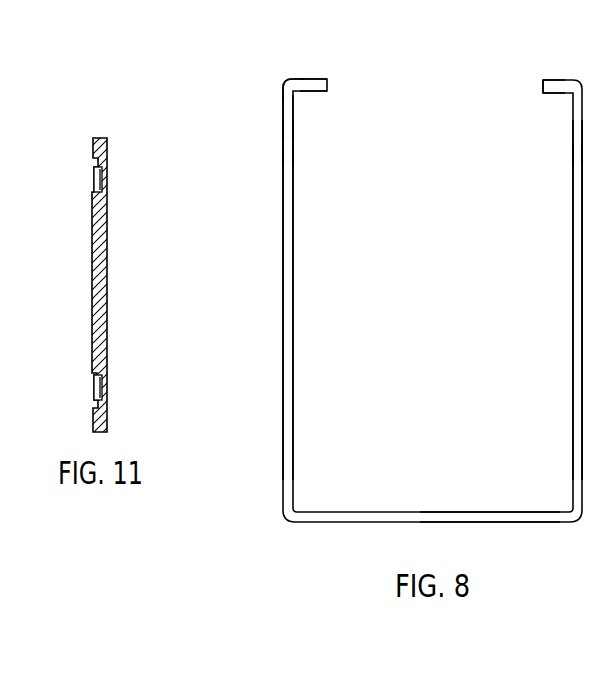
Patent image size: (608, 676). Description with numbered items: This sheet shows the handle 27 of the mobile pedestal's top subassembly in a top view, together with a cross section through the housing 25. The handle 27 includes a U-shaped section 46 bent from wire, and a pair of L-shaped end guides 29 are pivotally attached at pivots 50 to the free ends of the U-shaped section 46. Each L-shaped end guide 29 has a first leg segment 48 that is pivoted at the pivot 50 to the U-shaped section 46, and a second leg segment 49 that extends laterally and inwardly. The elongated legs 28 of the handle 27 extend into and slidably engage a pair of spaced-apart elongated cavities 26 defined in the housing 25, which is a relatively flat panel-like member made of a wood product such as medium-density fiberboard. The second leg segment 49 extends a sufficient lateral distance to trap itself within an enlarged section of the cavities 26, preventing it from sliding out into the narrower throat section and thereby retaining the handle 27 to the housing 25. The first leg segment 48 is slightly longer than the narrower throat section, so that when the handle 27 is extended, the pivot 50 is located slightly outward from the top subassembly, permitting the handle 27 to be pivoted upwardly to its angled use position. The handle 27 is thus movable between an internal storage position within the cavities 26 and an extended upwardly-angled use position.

In FIG. 11, the housing 25 is at (105, 122).
In FIG. 11, the cavities 26 is at (97, 180).
In FIG. 8, the handle 27 is at (332, 540).
In FIG. 8, the legs 28 is at (293, 335).
In FIG. 8, the L-shaped end guides 29 is at (322, 78).
In FIG. 8, the U-shaped section 46 is at (500, 523).
In FIG. 8, the first leg segment 48 is at (283, 117).
In FIG. 8, the second leg segment 49 is at (297, 78).
In FIG. 8, the pivots 50 is at (287, 156).